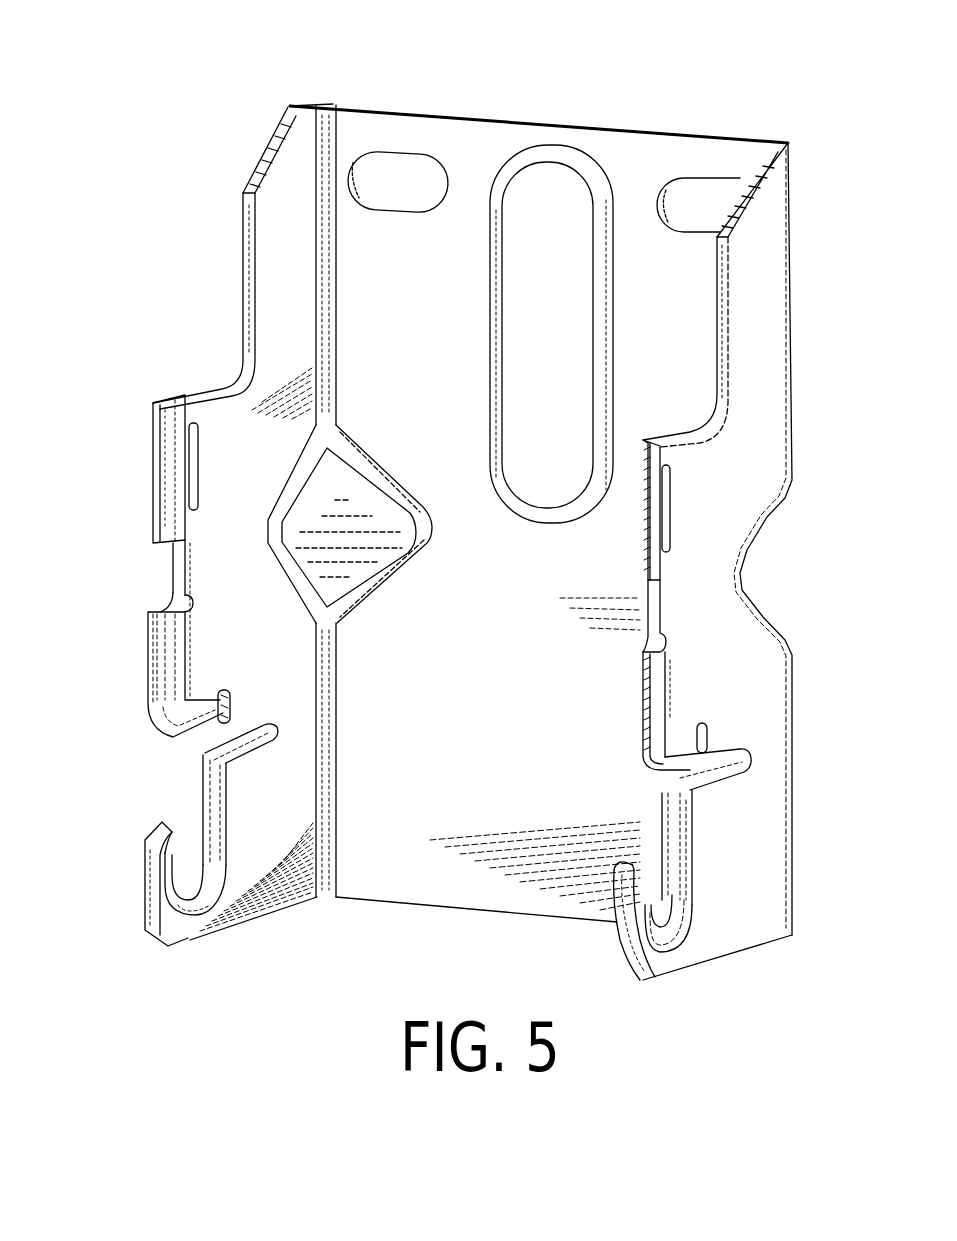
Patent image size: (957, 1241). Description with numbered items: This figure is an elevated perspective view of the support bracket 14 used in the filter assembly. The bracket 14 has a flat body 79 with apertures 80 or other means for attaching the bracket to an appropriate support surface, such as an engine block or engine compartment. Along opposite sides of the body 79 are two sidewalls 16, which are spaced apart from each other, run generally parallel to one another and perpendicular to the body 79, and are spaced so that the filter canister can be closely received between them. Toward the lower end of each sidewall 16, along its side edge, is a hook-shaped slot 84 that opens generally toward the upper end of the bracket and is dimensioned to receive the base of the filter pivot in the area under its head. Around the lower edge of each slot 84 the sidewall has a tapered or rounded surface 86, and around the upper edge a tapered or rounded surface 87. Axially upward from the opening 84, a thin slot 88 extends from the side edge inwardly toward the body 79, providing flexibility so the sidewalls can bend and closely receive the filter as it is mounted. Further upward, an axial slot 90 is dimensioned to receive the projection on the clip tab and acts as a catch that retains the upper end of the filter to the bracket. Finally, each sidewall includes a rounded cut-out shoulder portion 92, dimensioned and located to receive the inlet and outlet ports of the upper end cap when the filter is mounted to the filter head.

The support bracket 14 is at (420, 128).
The flat body 79 is at (488, 665).
The apertures 80 is at (400, 192).
The rounded cut-out shoulder portion 92 is at (244, 254).
The axial slot 90 is at (194, 470).
The sidewalls 16 is at (205, 653).
The tapered or rounded surface 87 is at (187, 736).
The thin slot 88 is at (244, 720).
The hook-shaped slot 84 is at (183, 810).
The tapered or rounded surface 86 is at (688, 834).